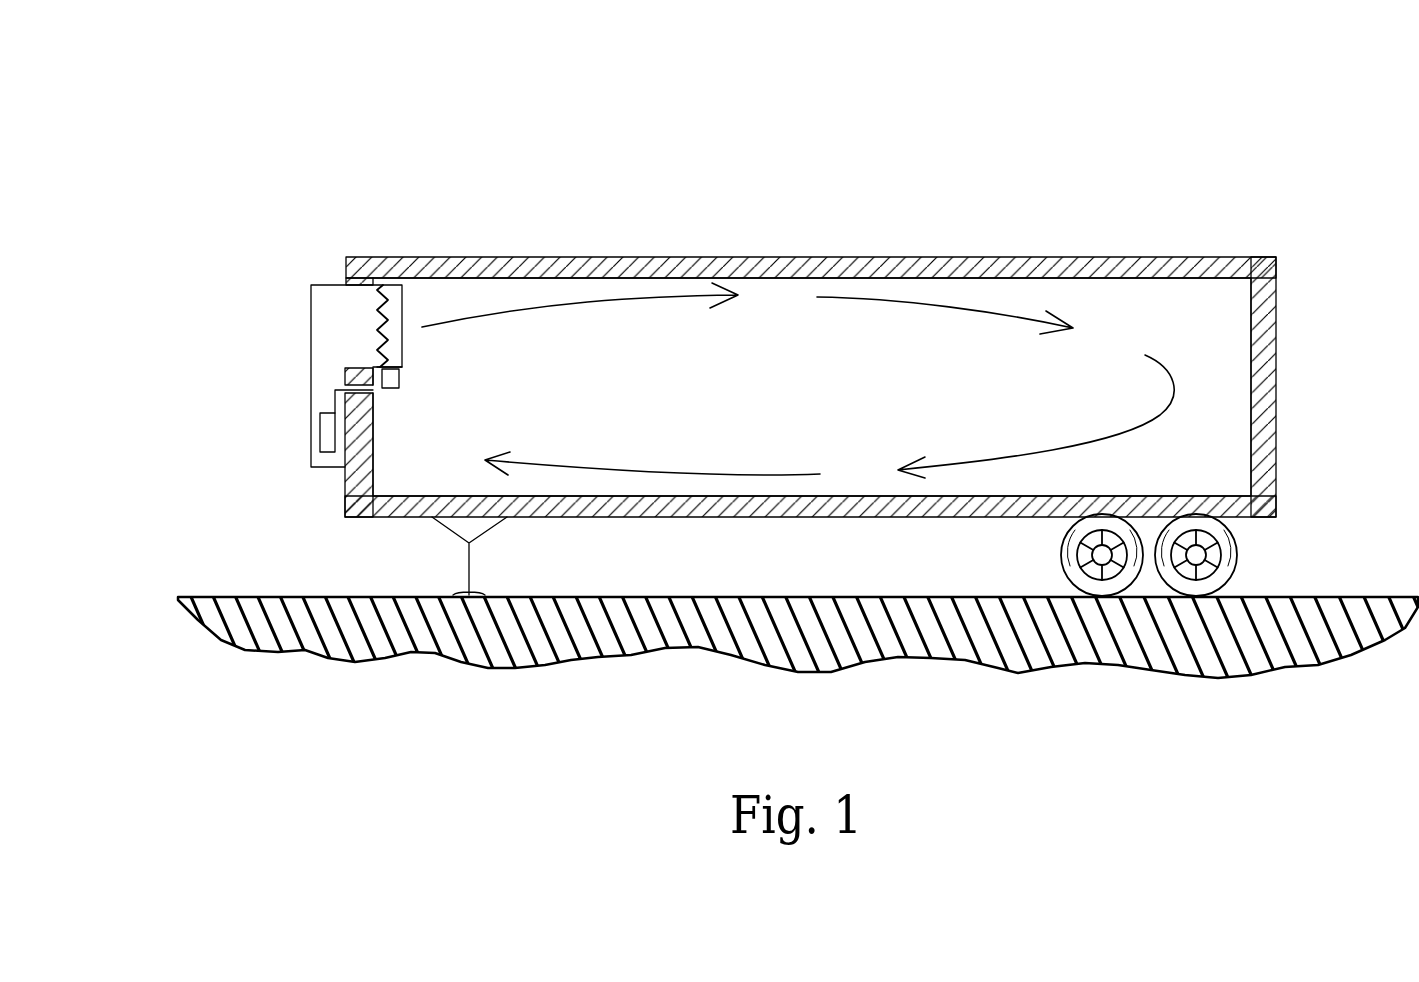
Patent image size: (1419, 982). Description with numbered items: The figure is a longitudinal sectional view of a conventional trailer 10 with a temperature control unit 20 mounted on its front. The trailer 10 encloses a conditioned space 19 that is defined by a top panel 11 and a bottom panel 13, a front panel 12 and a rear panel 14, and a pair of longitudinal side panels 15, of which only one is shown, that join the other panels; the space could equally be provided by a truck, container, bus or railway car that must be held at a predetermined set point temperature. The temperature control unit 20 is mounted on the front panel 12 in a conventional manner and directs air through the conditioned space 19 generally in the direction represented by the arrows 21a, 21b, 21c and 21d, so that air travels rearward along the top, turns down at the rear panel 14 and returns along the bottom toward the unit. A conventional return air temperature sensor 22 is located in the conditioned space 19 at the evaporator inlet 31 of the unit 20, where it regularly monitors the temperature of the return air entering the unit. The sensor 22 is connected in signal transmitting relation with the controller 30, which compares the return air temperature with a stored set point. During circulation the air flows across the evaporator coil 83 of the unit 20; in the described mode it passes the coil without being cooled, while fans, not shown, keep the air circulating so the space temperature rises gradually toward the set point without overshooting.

The trailer 10 is at (1031, 195).
The top panel 11 is at (650, 266).
The front panel 12 is at (350, 494).
The bottom panel 13 is at (798, 518).
The rear panel 14 is at (1270, 408).
The longitudinal side panel 15 is at (829, 402).
The conditioned space 19 is at (417, 497).
The temperature control unit 20 is at (293, 358).
The arrow 21a is at (598, 303).
The arrow 21b is at (898, 298).
The arrow 21c is at (1017, 453).
The arrow 21d is at (664, 473).
The return air temperature sensor 22 is at (399, 376).
The controller 30 is at (320, 440).
The evaporator inlet 31 is at (402, 363).
The evaporator coil 83 is at (380, 317).